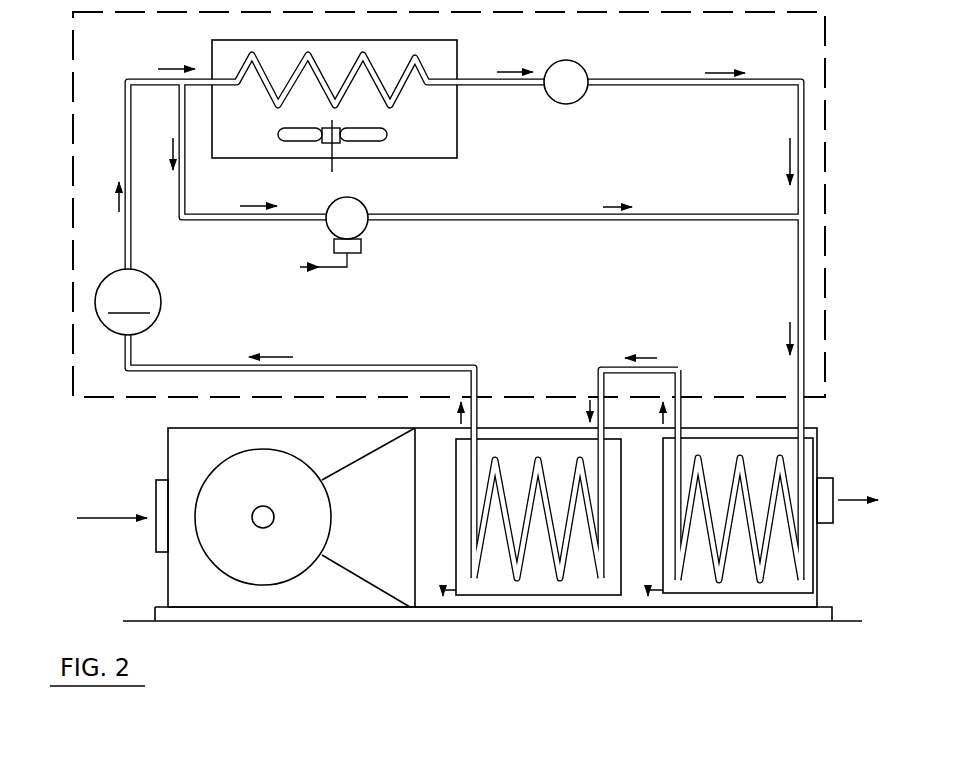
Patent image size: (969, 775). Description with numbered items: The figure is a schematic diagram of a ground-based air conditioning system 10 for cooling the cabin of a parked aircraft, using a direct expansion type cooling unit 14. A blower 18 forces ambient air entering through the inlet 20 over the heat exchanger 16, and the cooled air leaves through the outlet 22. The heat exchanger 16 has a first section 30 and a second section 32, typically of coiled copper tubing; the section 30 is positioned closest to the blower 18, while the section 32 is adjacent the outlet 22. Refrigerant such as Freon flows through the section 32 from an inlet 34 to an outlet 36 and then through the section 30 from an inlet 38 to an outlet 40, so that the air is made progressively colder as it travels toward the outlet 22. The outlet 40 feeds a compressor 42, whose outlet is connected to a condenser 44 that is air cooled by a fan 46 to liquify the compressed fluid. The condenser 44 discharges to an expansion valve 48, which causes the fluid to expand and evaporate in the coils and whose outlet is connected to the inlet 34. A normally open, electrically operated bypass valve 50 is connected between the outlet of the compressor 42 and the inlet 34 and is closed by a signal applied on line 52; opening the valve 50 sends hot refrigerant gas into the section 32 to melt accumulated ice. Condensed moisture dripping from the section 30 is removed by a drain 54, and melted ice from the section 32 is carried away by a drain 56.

The ground-based air conditioning system 10 is at (165, 579).
The cooling unit 14 is at (68, 138).
The heat exchanger 16 is at (436, 516).
The blower 18 is at (252, 472).
The inlet 20 is at (155, 500).
The outlet 22 is at (826, 478).
The first section 30 is at (541, 585).
The second section 32 is at (733, 580).
The inlet 34 is at (797, 434).
The outlet 36 is at (687, 430).
The inlet 38 is at (598, 436).
The outlet 40 is at (468, 432).
The compressor 42 is at (143, 278).
The condenser 44 is at (222, 45).
The fan 46 is at (298, 138).
The expansion valve 48 is at (580, 65).
The bypass valve 50 is at (363, 204).
The line 52 is at (302, 266).
The drain 54 is at (438, 590).
The drain 56 is at (648, 584).